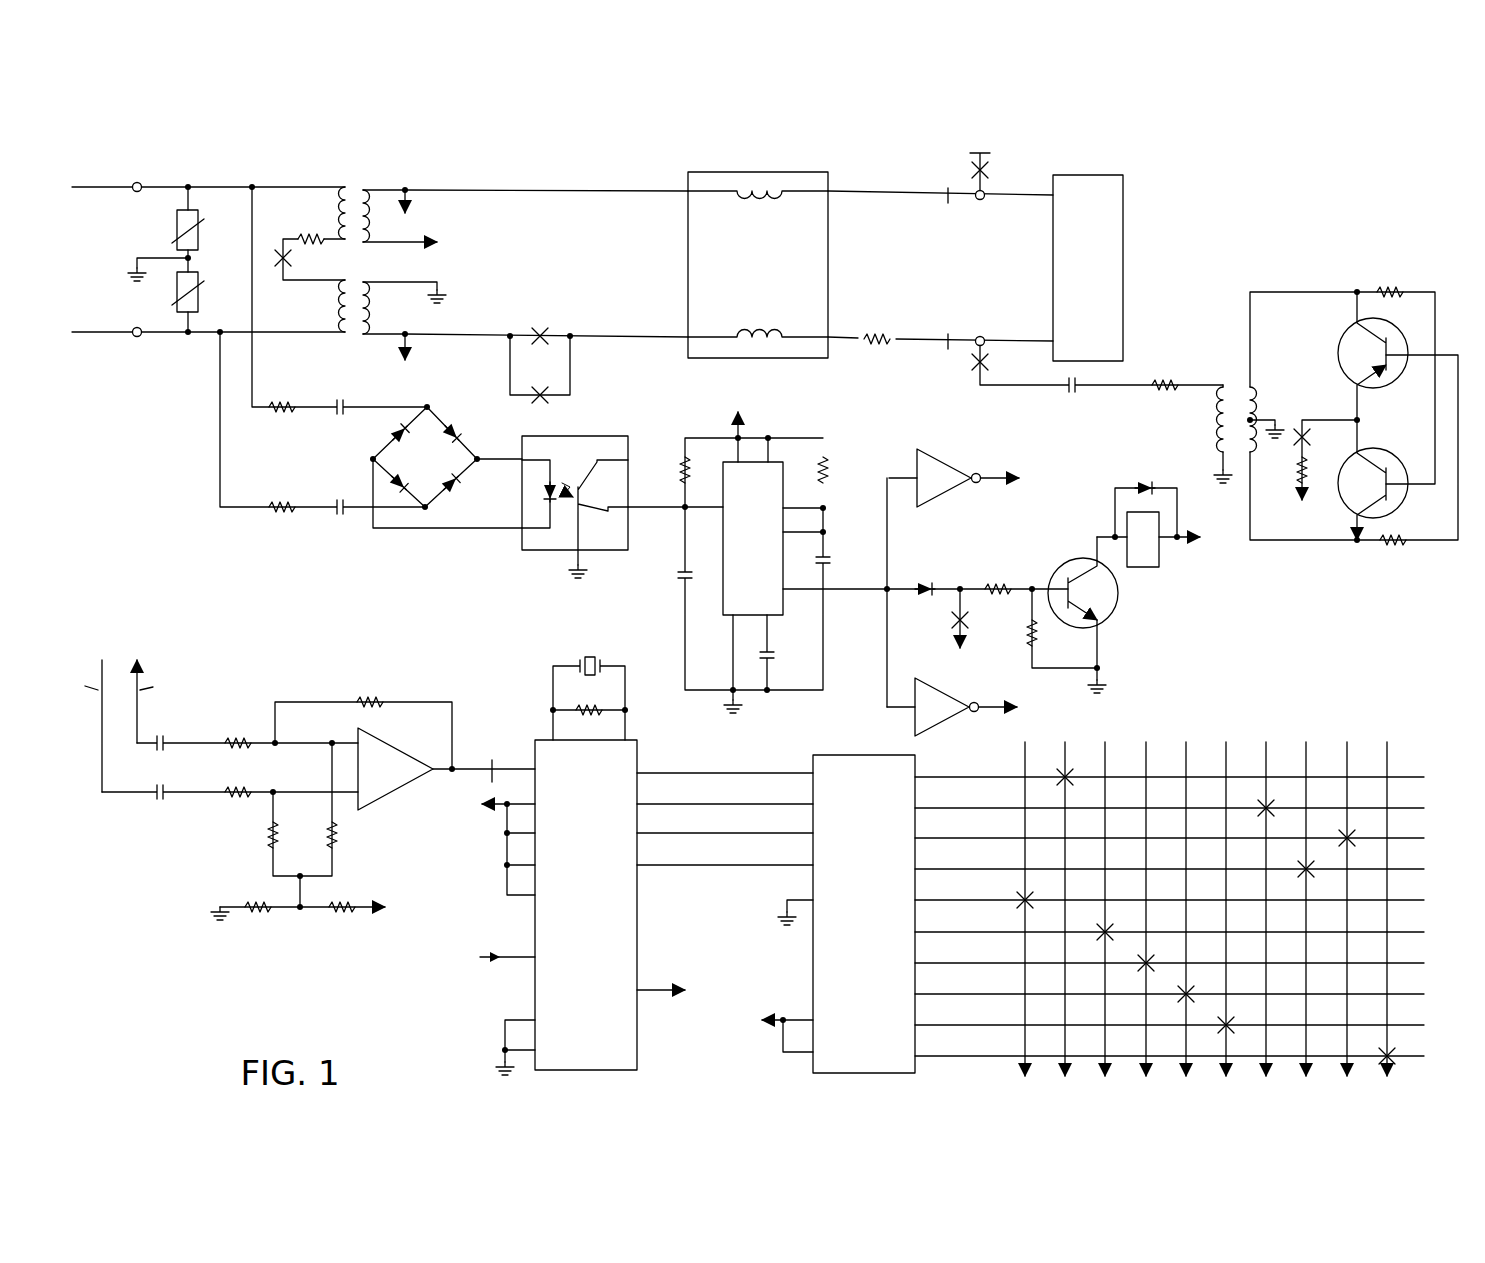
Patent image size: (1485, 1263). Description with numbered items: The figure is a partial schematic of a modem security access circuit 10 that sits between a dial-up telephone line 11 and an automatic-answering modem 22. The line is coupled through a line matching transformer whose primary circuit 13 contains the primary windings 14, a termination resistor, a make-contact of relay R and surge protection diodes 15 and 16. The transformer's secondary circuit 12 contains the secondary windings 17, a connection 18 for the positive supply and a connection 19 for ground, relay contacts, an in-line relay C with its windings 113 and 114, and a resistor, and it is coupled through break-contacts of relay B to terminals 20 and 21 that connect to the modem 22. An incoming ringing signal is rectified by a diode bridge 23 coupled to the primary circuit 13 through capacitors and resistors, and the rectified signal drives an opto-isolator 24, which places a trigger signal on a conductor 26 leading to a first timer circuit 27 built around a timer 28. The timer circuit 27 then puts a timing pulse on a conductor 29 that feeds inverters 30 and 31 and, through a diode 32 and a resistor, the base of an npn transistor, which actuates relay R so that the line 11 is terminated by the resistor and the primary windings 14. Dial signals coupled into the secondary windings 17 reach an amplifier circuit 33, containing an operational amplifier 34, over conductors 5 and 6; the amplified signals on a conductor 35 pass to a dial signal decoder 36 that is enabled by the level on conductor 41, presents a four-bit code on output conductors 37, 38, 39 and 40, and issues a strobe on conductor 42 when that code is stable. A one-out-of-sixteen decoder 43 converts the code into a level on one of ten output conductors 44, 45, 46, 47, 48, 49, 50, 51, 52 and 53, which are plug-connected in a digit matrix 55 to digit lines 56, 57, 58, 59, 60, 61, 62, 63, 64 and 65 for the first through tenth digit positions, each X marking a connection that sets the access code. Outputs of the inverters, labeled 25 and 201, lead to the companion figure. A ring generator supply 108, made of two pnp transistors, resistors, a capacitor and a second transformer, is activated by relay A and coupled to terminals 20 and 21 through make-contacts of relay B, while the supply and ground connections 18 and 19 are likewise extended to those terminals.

The conductor 5 is at (412, 198).
The conductor 6 is at (408, 354).
The modem security access circuit 10 is at (279, 1000).
The dial-up telephone line 11 is at (100, 308).
The secondary circuit 12 is at (543, 207).
The primary circuit 13 is at (191, 239).
The primary windings 14 is at (338, 311).
The surge protection diode 15 is at (199, 233).
The surge protection diode 16 is at (199, 295).
The secondary windings 17 is at (365, 217).
The connection for +17 V supply 18 is at (412, 242).
The connection for ground 19 is at (400, 284).
The terminal 20 is at (983, 336).
The terminal 21 is at (984, 200).
The automatic-answering modem 22 is at (1123, 232).
The diode bridge 23 is at (440, 424).
The opto-isolator 24 is at (599, 436).
The inverter output to FIG 2 25 is at (994, 707).
The conductor 26 is at (648, 510).
The first timer circuit 27 is at (713, 683).
The timer 28 is at (718, 613).
The conductor 29 is at (845, 594).
The inverter 30 is at (957, 489).
The inverter 31 is at (929, 684).
The diode 32 is at (925, 582).
The amplifier circuit 33 is at (259, 728).
The operational amplifier 741 34 is at (407, 755).
The conductor 35 is at (468, 768).
The dial signal decoder 36 is at (638, 757).
The output conductor 37 is at (740, 773).
The output conductor 38 is at (740, 804).
The output conductor 39 is at (740, 833).
The output conductor 40 is at (740, 865).
The conductor 41 is at (511, 957).
The conductor 42 is at (655, 993).
The 1-out-of-16 decoder 43 is at (855, 754).
The output conductor 44 is at (963, 777).
The output conductor 45 is at (963, 808).
The output conductor 46 is at (963, 838).
The output conductor 47 is at (963, 869).
The output conductor 48 is at (963, 900).
The output conductor 49 is at (963, 932).
The output conductor 50 is at (963, 963).
The output conductor 51 is at (963, 994).
The output conductor 52 is at (963, 1025).
The output conductor 53 is at (963, 1056).
The digit matrix 55 is at (1190, 913).
The digit line 56 is at (1026, 764).
The digit line 57 is at (1066, 764).
The digit line 58 is at (1106, 764).
The digit line 59 is at (1147, 764).
The digit line 60 is at (1187, 764).
The digit line 61 is at (1227, 764).
The digit line 62 is at (1267, 764).
The digit line 63 is at (1307, 764).
The digit line 64 is at (1348, 764).
The digit line 65 is at (1388, 764).
The ring generator supply 108 is at (1303, 291).
The winding of relay C 113 is at (772, 198).
The winding of relay C 114 is at (767, 335).
The inverter output to FIG 2 201 is at (997, 477).